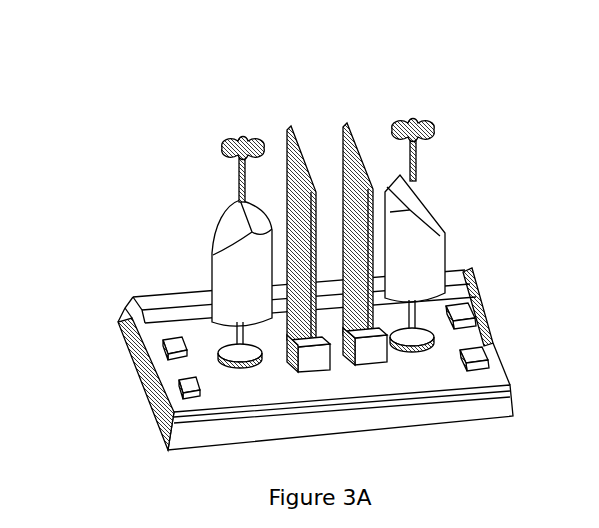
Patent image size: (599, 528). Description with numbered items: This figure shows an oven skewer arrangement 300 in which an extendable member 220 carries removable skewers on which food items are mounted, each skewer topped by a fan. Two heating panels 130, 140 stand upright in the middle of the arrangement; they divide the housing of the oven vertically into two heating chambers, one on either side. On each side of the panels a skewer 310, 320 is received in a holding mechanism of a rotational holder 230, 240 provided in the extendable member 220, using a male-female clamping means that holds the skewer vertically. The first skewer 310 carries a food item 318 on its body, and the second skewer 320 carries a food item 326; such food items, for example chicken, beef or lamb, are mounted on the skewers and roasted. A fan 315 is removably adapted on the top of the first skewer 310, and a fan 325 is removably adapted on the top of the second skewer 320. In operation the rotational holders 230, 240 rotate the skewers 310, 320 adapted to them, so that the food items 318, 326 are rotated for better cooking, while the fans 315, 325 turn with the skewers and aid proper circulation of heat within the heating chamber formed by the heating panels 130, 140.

The connector assembly 300 is at (147, 152).
The extendable member 220 is at (467, 410).
The rotational holder 230 is at (420, 325).
The rotational holder 240 is at (228, 346).
The heating panel 130 is at (294, 128).
The heating panel 140 is at (355, 138).
The skewer 310 is at (237, 183).
The fan 315 is at (237, 140).
The first pin body 318 is at (210, 262).
The skewer 320 is at (420, 170).
The fan 325 is at (428, 125).
The food item 326 is at (442, 230).